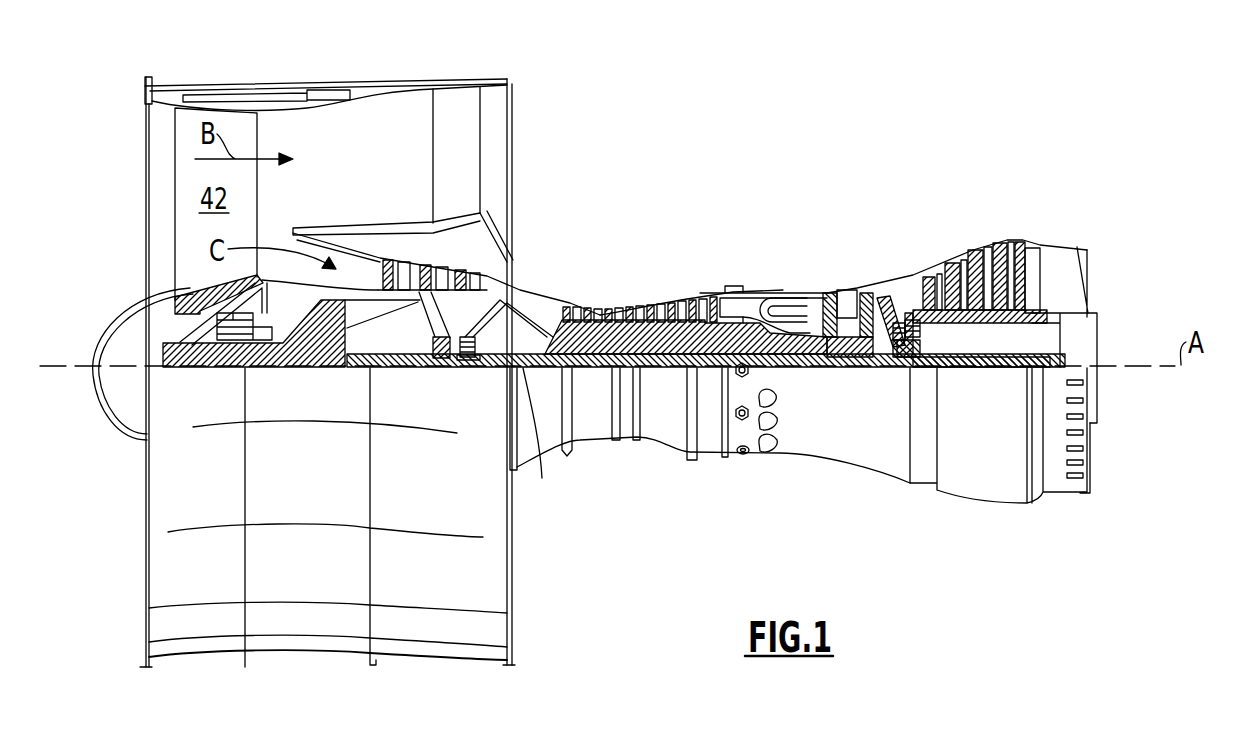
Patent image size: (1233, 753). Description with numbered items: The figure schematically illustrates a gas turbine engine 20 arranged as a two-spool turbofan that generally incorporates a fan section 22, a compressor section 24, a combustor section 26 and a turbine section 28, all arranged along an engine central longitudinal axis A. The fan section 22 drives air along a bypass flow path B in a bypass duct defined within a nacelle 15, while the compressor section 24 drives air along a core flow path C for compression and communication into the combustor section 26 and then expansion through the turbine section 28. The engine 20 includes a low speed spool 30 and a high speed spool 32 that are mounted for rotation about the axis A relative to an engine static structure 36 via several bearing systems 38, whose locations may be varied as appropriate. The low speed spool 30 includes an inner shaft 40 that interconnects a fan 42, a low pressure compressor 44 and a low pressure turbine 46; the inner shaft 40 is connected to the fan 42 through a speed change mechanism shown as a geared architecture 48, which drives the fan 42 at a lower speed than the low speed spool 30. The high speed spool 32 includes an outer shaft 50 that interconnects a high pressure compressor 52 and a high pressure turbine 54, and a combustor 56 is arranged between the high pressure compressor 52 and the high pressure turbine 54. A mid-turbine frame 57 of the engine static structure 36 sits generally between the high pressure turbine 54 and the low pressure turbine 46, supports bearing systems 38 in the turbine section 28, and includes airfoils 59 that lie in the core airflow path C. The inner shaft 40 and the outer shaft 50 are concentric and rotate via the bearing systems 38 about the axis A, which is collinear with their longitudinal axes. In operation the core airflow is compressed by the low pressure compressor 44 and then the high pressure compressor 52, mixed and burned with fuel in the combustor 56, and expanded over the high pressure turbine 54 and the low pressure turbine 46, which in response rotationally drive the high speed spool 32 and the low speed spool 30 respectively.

The gas turbine engine 20 is at (787, 135).
The fan section 22 is at (259, 80).
The nacelle 15 is at (328, 90).
The fan 42 is at (275, 387).
The geared architecture 48 is at (332, 352).
The bearing systems 38 is at (468, 352).
The low pressure compressor 44 is at (483, 214).
The inner shaft 40 is at (527, 383).
The compressor section 24 is at (556, 277).
The high pressure compressor 52 is at (640, 320).
The high speed spool 32 is at (710, 323).
The outer shaft 50 is at (783, 355).
The combustor section 26 is at (780, 265).
The combustor 56 is at (784, 307).
The high pressure turbine 54 is at (848, 285).
The mid-turbine frame 57 is at (889, 284).
The turbine section 28 is at (929, 230).
The low pressure turbine 46 is at (977, 253).
The airfoils 59 is at (928, 332).
The low speed spool 30 is at (667, 370).
The engine static structure 36 is at (707, 454).